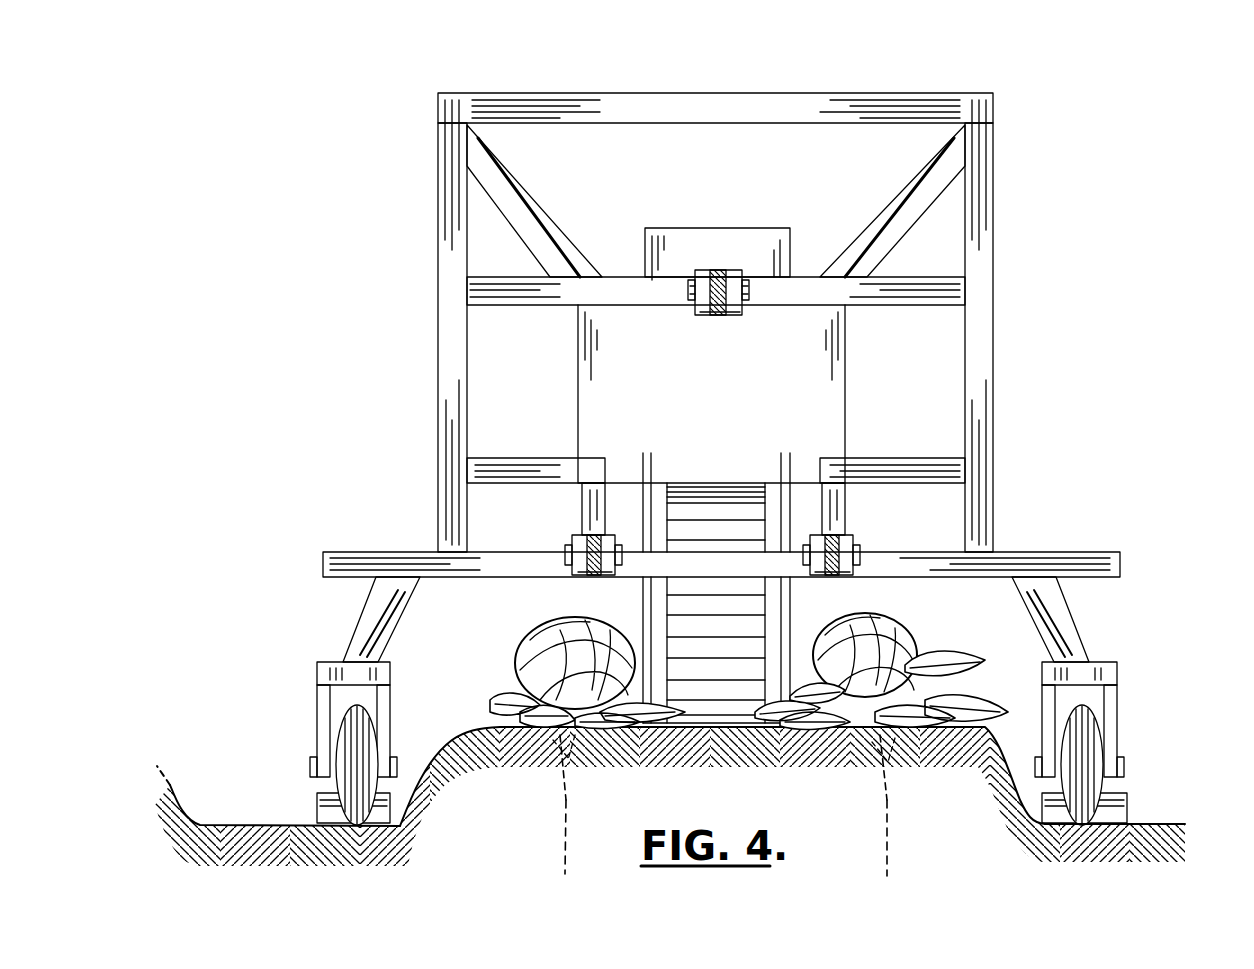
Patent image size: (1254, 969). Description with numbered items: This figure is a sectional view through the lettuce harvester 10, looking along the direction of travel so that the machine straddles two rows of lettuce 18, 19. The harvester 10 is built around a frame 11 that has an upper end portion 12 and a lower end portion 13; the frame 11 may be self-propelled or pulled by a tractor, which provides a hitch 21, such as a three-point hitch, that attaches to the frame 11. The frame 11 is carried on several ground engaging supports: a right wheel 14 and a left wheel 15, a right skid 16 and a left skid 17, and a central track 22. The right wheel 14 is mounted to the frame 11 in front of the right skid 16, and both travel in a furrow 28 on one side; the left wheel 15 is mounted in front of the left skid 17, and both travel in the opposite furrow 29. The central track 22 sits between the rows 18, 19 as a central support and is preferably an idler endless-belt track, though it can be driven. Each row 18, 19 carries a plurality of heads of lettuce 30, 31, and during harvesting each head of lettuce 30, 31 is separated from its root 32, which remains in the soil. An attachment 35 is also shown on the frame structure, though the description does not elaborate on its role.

The lettuce harvester 10 is at (738, 433).
The frame 11 is at (438, 378).
The upper end portion 12 is at (995, 100).
The lower end portion 13 is at (383, 552).
The right wheel 14 is at (330, 780).
The left wheel 15 is at (1100, 785).
The right skid 16 is at (316, 808).
The left skid 17 is at (1122, 800).
The row of lettuce 18 is at (560, 845).
The row of lettuce 19 is at (885, 840).
The hitch 21 is at (717, 315).
The central track 22 is at (762, 612).
The furrow 28 is at (243, 816).
The furrow 29 is at (1150, 819).
The head of lettuce 30 is at (527, 645).
The head of lettuce 31 is at (920, 648).
The root 32 is at (573, 786).
The attachment 35 is at (728, 270).